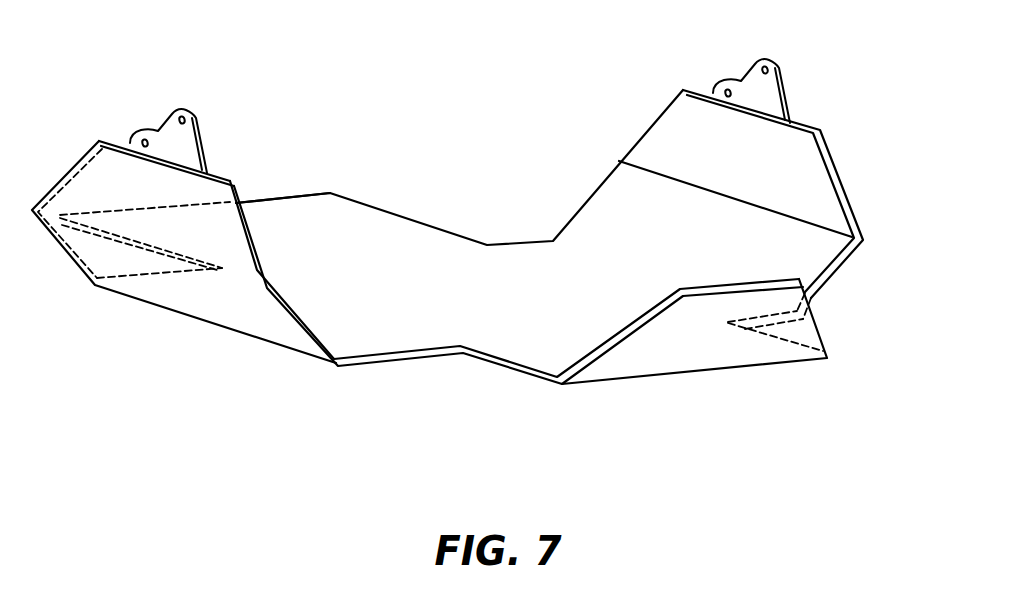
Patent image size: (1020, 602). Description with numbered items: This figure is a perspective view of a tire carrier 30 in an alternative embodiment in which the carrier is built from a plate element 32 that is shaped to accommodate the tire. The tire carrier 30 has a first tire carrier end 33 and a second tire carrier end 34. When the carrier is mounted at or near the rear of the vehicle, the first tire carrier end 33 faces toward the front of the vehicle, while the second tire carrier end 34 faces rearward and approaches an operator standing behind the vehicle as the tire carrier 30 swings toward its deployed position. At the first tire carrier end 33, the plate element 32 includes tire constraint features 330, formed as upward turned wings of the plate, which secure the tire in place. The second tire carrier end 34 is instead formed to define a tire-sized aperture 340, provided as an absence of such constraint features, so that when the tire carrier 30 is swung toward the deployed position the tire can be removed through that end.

The tire carrier 30 is at (835, 165).
The plate element 32 is at (636, 135).
The first tire carrier end 33 is at (105, 302).
The second tire carrier end 34 is at (462, 437).
The tire constraint features 330 is at (778, 167).
The tire-sized aperture 340 is at (258, 189).